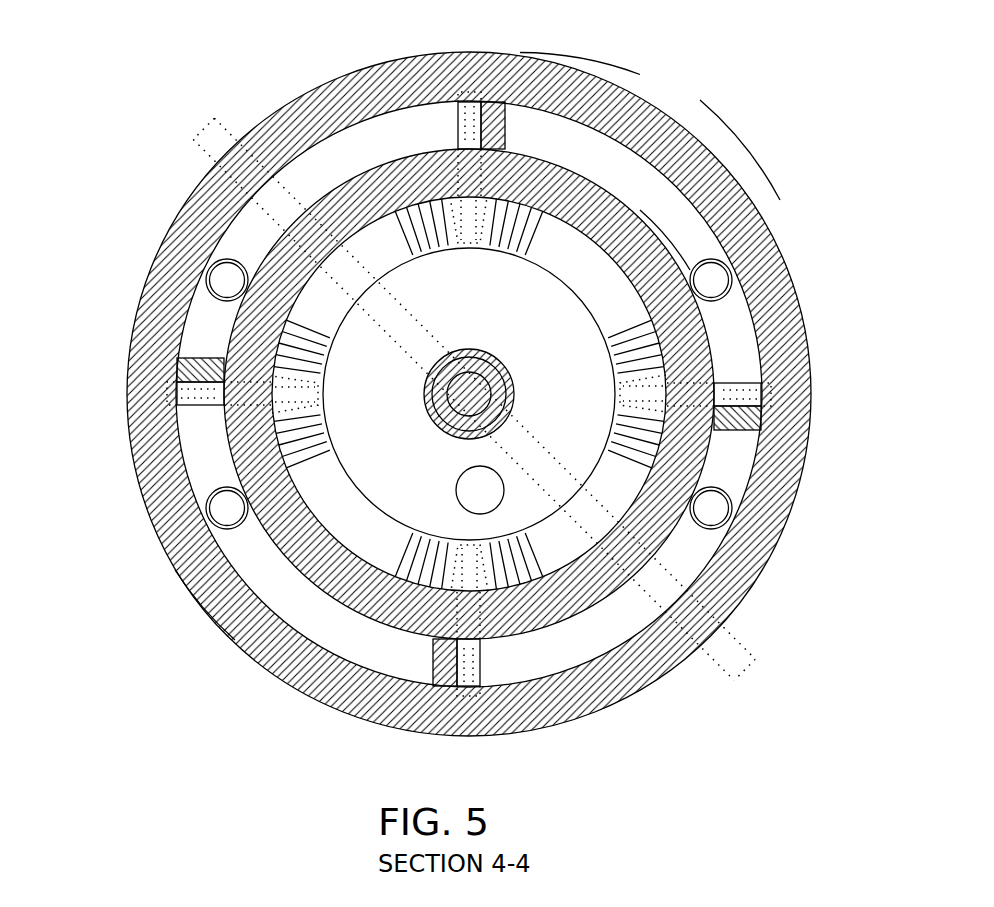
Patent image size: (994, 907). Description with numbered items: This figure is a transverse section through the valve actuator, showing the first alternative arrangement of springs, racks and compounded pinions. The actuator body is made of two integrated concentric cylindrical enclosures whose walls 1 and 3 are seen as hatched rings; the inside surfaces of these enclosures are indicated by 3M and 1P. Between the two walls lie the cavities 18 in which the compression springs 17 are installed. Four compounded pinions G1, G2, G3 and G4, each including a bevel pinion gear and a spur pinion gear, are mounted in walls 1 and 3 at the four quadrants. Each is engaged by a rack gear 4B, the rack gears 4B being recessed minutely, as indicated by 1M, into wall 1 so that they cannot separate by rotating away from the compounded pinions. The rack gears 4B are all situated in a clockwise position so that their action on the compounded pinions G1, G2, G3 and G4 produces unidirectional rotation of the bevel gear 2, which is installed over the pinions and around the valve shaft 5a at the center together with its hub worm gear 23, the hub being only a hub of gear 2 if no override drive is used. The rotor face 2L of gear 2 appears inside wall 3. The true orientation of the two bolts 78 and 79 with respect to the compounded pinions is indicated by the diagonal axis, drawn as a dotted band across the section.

The wall 1 is at (752, 676).
The recess 1M is at (507, 100).
The inner surface of enclosure 1 1P is at (257, 595).
The bevel gear 2 is at (189, 674).
The rotor slot 2L is at (413, 228).
The wall 3 is at (615, 222).
The inner surface of enclosure 3 3M is at (660, 337).
The rack gear 4B is at (493, 108).
The shaft 5a is at (485, 397).
The compression spring 17 is at (230, 260).
The cavity 18 is at (678, 230).
The hub worm gear 23 is at (473, 350).
The bolt 78 is at (233, 128).
The bolt 79 is at (738, 625).
The compounded pinion G1 is at (457, 127).
The compounded pinion G2 is at (745, 380).
The compounded pinion G3 is at (488, 684).
The compounded pinion G4 is at (192, 405).